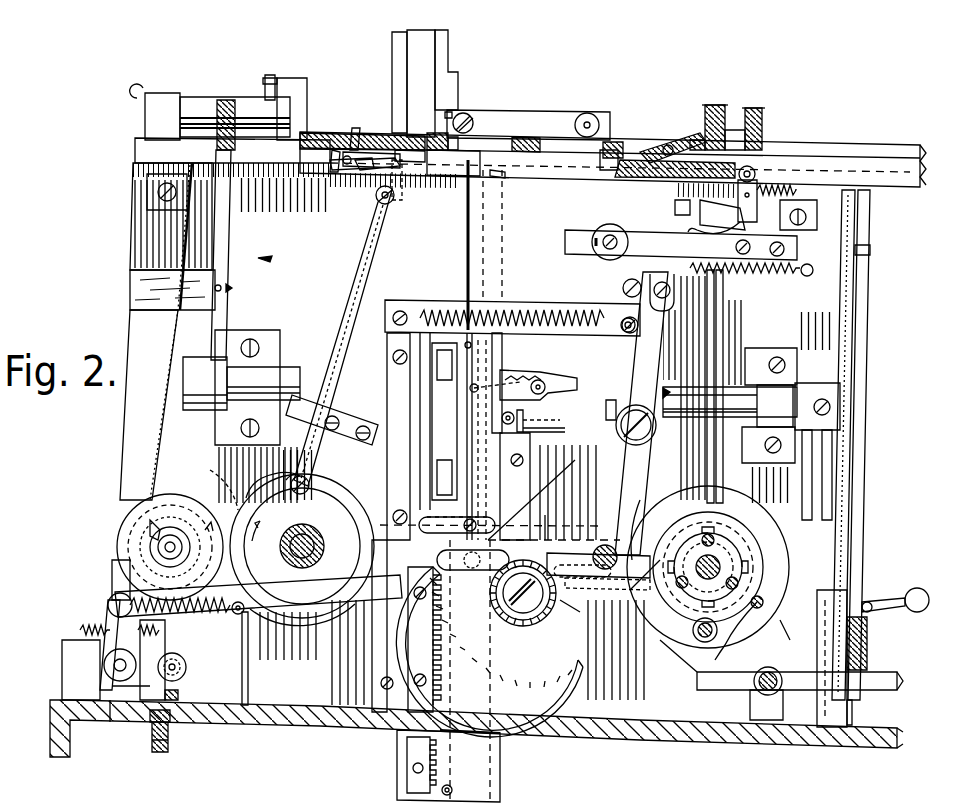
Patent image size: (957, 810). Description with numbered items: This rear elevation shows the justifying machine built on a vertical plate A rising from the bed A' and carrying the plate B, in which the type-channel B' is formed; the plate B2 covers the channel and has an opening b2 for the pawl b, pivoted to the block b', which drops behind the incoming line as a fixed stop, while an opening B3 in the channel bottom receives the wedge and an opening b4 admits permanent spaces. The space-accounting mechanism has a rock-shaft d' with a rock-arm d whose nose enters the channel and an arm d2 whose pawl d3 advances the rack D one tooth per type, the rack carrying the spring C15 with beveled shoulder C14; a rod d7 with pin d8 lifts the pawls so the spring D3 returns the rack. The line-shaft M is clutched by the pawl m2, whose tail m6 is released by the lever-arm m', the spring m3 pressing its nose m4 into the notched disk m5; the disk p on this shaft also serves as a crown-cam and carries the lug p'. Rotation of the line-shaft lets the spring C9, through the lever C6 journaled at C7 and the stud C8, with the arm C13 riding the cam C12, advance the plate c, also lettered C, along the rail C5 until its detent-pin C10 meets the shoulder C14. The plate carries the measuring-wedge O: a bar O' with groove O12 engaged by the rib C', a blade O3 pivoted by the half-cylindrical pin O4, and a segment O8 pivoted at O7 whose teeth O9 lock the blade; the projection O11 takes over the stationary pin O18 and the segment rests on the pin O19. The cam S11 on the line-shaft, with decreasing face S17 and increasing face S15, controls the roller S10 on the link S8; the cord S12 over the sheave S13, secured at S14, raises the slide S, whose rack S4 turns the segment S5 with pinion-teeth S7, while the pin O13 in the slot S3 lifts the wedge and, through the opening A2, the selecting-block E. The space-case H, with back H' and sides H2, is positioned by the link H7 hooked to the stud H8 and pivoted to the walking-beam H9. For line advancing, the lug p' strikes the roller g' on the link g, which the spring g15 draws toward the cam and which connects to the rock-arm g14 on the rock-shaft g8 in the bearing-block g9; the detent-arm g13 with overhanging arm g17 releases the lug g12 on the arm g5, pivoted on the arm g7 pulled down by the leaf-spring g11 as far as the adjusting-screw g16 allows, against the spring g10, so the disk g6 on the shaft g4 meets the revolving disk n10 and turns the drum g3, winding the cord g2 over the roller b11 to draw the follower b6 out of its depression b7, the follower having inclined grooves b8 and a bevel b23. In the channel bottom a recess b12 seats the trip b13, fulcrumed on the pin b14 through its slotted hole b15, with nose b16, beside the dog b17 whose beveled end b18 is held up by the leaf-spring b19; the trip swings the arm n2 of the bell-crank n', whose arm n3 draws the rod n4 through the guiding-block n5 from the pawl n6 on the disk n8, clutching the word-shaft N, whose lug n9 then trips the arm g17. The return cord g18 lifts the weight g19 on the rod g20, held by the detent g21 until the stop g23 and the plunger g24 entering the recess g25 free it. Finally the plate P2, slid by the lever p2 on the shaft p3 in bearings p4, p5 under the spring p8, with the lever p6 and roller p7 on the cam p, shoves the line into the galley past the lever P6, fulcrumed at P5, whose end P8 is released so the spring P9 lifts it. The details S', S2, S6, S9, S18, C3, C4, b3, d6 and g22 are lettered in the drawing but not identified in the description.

The base plate A' is at (458, 738).
The top rail B is at (512, 168).
The rail bar B' is at (619, 138).
The rail section B2 is at (845, 148).
The rail block B3 is at (455, 176).
The block p3 is at (285, 380).
The hook P5 is at (150, 92).
The rod P6 is at (212, 97).
The sleeve P2 is at (265, 130).
The post P9 is at (272, 78).
The screw P8 is at (213, 130).
The column lever g2 is at (175, 345).
The bar b11 is at (190, 192).
The vertical bar p2 is at (232, 198).
The rod p4 is at (258, 365).
The pin p8 is at (233, 289).
The frame A is at (430, 349).
The column H is at (451, 81).
The column plate H' is at (421, 83).
The column post H2 is at (450, 50).
The bar H7 is at (528, 125).
The screw H8 is at (474, 121).
The roller H9 is at (587, 114).
The pin b18 is at (447, 114).
The block b16 is at (455, 138).
The plate b4 is at (405, 149).
The pin b12 is at (355, 128).
The pin b14 is at (338, 150).
The bar b13 is at (362, 152).
The pin b15 is at (345, 166).
The lever b17 is at (370, 170).
The slot b19 is at (396, 162).
The rail block b2 is at (616, 150).
The pivot n2 is at (376, 194).
The lever n3 is at (374, 222).
The arm n' is at (335, 192).
The arm n4 is at (352, 272).
The bar n5 is at (332, 416).
The screw n6 is at (310, 482).
The arm n8 is at (340, 485).
The wheel N is at (325, 546).
The hub n10 is at (288, 538).
The arc n9 is at (178, 490).
The bar g is at (337, 598).
The wheel g6 is at (118, 540).
The gear g4 is at (178, 560).
The ring g12 is at (150, 532).
The pawl g17 is at (155, 527).
The bar g3 is at (112, 562).
The arm g13 is at (130, 572).
The arm g14 is at (110, 595).
The spring g10 is at (98, 614).
The pivot g15 is at (250, 625).
The block g8 is at (104, 665).
The bar g5 is at (170, 630).
The roller g7 is at (186, 660).
The nut g16 is at (180, 688).
The post g9 is at (112, 704).
The screw g11 is at (150, 712).
The bar C4 is at (545, 301).
The spring C9 is at (560, 316).
The frame bar c is at (470, 283).
The rod C' is at (496, 245).
The slide O is at (453, 381).
The bar O' is at (463, 341).
The slide E is at (442, 421).
The plate A2 is at (443, 477).
The pin O12 is at (465, 348).
The pin O7 is at (470, 390).
The link O13 is at (472, 512).
The pawl O3 is at (518, 370).
The pivot O8 is at (545, 380).
The pin O9 is at (516, 404).
The pin O19 is at (552, 388).
The link O18 is at (540, 410).
The bar O11 is at (540, 430).
The pin O4 is at (496, 181).
The bar S' is at (515, 486).
The link S3 is at (452, 530).
The bar S2 is at (352, 685).
The rack S4 is at (410, 748).
The rod S12 is at (447, 750).
The pin S14 is at (448, 786).
The rack housing S is at (477, 757).
The bar S8 is at (550, 540).
The segment rack S5 is at (489, 652).
The gear S7 is at (524, 627).
The hub S6 is at (515, 612).
The pin S9 is at (548, 506).
The rod S13 is at (555, 496).
The bar S10 is at (606, 546).
The slot S11 is at (590, 592).
The arm g' is at (586, 616).
The rod C12 is at (632, 652).
The lever C5 is at (636, 358).
The hook C8 is at (650, 282).
The pin C6 is at (636, 335).
The block C7 is at (610, 405).
The screw C13 is at (604, 480).
The bar C15 is at (797, 250).
The disc C10 is at (596, 234).
The screw C14 is at (614, 234).
The pin C3 is at (600, 232).
The block C is at (672, 209).
The comb b7 is at (678, 188).
The spring bar b8 is at (655, 150).
The pin b6 is at (668, 145).
The block b is at (689, 131).
The screw b3 is at (714, 118).
The screw b23 is at (752, 120).
The block b' is at (749, 132).
The pivot d' is at (772, 153).
The arm d is at (770, 193).
The lever d3 is at (700, 228).
The block d2 is at (722, 210).
The block d6 is at (780, 217).
The lug g23 is at (870, 250).
The spring d8 is at (742, 280).
The block D3 is at (795, 318).
The block D is at (768, 325).
The rod p5 is at (790, 372).
The block p6 is at (800, 482).
The bar d7 is at (706, 467).
The bar p is at (725, 386).
The bar p' is at (762, 493).
The bar g18 is at (852, 330).
The bar g20 is at (862, 500).
The bar p7 is at (846, 540).
The wheel M is at (690, 680).
The ring S15 is at (707, 508).
The pins S18 is at (722, 540).
The ring m5 is at (742, 558).
The arm m4 is at (642, 502).
The arm m2 is at (700, 607).
The arm m6 is at (706, 612).
The bar m3 is at (740, 622).
The bar end m' is at (898, 669).
The screw S17 is at (763, 605).
The arm g25 is at (845, 622).
The block g24 is at (868, 640).
The pivot g22 is at (867, 600).
The handle g21 is at (905, 599).
The lug g19 is at (852, 706).